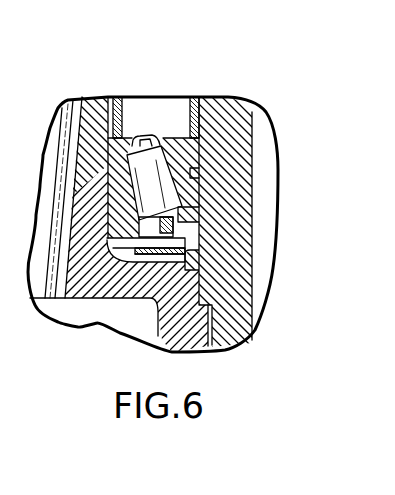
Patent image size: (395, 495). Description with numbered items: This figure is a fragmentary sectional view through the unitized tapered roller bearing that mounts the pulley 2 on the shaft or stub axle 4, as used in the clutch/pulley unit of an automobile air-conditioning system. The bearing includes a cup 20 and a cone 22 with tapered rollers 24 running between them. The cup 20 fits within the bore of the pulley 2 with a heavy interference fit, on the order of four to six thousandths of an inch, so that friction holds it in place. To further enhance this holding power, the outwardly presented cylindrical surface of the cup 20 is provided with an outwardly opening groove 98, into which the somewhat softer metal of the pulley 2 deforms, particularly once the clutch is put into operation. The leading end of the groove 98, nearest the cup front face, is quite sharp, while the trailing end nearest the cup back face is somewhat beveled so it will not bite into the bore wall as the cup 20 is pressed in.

The pulley 2 is at (245, 248).
The stub axle 4 is at (108, 283).
The cup 20 is at (185, 163).
The cone 22 is at (110, 163).
The tapered rollers 24 is at (167, 162).
The groove 98 is at (200, 170).